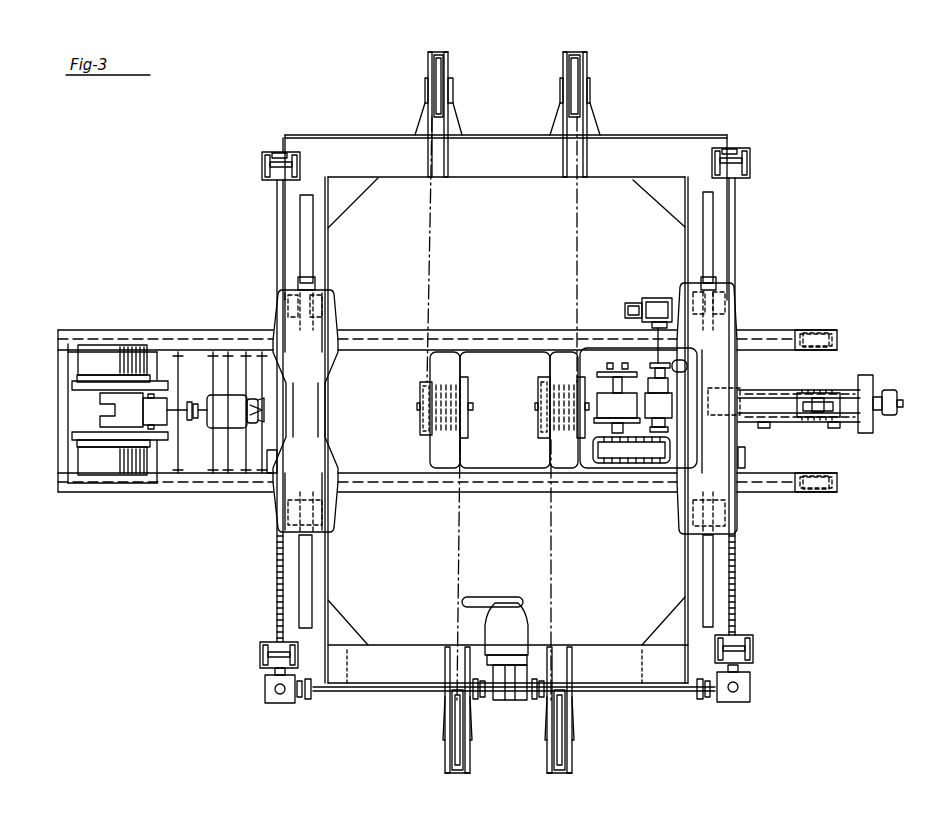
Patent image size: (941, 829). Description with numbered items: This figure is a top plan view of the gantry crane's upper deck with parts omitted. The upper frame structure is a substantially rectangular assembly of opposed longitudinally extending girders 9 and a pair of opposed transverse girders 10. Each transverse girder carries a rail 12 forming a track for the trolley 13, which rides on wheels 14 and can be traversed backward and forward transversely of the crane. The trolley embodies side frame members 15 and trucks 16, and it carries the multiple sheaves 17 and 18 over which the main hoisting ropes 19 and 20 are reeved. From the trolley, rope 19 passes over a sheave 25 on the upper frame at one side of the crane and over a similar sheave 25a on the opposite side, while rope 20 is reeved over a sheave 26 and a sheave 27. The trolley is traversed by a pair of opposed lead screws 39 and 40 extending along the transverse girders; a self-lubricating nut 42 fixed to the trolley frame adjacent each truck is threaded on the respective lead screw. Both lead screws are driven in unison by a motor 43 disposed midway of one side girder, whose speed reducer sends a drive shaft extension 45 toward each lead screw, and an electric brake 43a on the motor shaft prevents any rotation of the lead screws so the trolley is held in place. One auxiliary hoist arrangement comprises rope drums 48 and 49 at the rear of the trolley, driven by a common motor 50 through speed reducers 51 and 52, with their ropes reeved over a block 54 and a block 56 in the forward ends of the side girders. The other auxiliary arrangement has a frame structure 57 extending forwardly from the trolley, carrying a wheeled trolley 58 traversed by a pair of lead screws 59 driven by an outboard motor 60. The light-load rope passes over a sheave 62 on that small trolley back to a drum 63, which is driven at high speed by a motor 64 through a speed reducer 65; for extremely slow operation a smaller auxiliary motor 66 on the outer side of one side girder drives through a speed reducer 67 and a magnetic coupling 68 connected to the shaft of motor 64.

The longitudinally extending girder 9 is at (413, 178).
The transverse girder 10 is at (312, 563).
The rail 12 is at (306, 248).
The trolley 13 is at (498, 328).
The wheel 14 is at (312, 284).
The side frame member 15 is at (378, 330).
The truck 16 is at (306, 405).
The sheave 17 is at (466, 391).
The sheave 18 is at (540, 426).
The main hoisting rope 19 is at (432, 260).
The main hoisting rope 20 is at (575, 239).
The sheave 25 is at (432, 73).
The sheave 25a is at (446, 757).
The sheave 26 is at (585, 67).
The sheave 27 is at (567, 757).
The lead screw 39 is at (281, 570).
The lead screw 40 is at (736, 575).
The nut 42 is at (276, 462).
The motor 43 is at (502, 630).
The electric brake 43a is at (476, 598).
The drive shaft extension 45 is at (629, 692).
The rope drum 48 is at (92, 358).
The rope drum 49 is at (90, 462).
The motor 50 is at (226, 405).
The speed reducer 51 is at (85, 388).
The speed reducer 52 is at (75, 436).
The block 54 is at (822, 494).
The block 56 is at (832, 328).
The frame structure 57 is at (760, 390).
The wheeled trolley 58 is at (818, 402).
The lead screw 59 is at (806, 393).
The outboard motor 60 is at (884, 398).
The sheave 62 is at (820, 419).
The drum 63 is at (612, 400).
The motor 64 is at (673, 405).
The speed reducer 65 is at (632, 463).
The auxiliary motor 66 is at (625, 310).
The speed reducer 67 is at (658, 300).
The magnetic coupling 68 is at (668, 371).